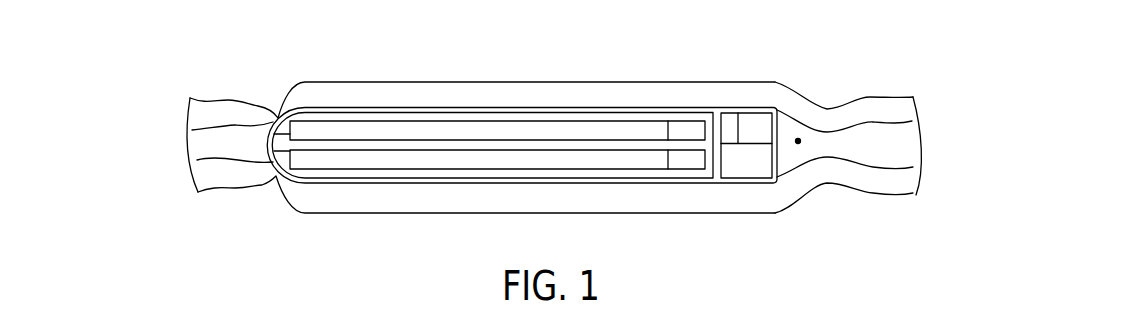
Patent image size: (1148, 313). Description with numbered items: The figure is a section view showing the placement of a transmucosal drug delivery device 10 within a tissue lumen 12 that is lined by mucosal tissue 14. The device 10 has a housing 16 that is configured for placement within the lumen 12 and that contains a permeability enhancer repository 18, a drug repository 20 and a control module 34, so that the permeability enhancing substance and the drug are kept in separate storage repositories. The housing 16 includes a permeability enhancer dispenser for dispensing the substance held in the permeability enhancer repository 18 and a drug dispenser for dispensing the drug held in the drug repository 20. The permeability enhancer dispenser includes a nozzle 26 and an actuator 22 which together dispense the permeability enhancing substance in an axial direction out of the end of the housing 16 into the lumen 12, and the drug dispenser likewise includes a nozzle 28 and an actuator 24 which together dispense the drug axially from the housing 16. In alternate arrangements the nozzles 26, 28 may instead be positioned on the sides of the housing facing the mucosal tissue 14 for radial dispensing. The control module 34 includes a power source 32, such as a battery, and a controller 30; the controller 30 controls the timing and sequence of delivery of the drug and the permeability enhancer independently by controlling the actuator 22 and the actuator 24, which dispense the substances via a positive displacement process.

The transmucosal drug delivery device 10 is at (447, 107).
The lumen 12 is at (798, 141).
The mucosal tissue 14 is at (305, 95).
The housing 16 is at (342, 185).
The permeability enhancer repository 18 is at (510, 128).
The drug repository 20 is at (510, 162).
The actuator 22 is at (668, 122).
The actuator 24 is at (668, 168).
The nozzle 26 is at (280, 117).
The nozzle 28 is at (280, 173).
The controller 30 is at (752, 120).
The power source 32 is at (742, 168).
The control module 34 is at (728, 122).